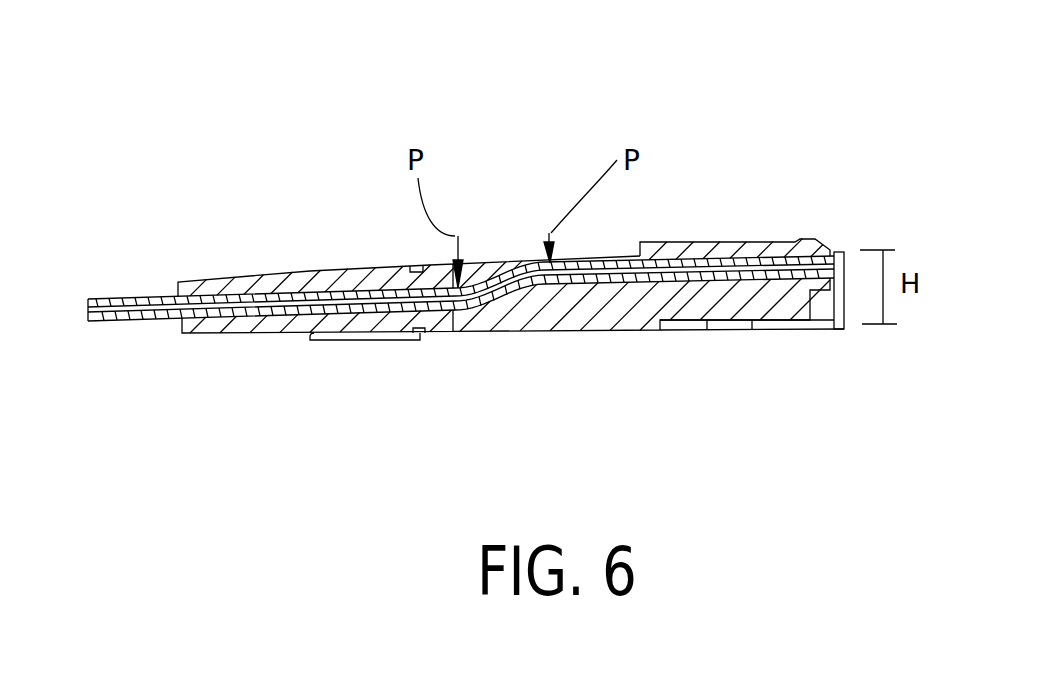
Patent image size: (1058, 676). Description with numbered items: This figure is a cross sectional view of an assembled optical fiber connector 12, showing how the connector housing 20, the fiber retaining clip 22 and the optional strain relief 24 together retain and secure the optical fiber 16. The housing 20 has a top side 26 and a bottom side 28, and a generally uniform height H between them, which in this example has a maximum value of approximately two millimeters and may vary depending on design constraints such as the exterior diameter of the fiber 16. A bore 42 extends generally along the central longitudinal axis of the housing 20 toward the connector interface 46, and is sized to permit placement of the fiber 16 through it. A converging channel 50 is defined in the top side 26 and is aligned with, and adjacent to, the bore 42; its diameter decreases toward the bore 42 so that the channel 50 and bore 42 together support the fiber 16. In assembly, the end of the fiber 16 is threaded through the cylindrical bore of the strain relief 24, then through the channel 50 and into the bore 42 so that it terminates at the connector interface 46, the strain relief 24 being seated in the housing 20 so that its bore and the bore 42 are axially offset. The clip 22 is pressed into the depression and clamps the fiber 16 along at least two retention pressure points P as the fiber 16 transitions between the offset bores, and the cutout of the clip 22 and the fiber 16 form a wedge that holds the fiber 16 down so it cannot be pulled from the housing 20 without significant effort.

The optical fiber connector 12 is at (840, 172).
The optical fiber 16 is at (100, 322).
The connector housing 20 is at (490, 336).
The fiber retaining clip 22 is at (490, 266).
The strain relief 24 is at (197, 330).
The top side 26 is at (650, 243).
The bottom side 28 is at (560, 336).
The bore 42 is at (718, 282).
The connector interface 46 is at (826, 244).
The converging channel 50 is at (567, 290).